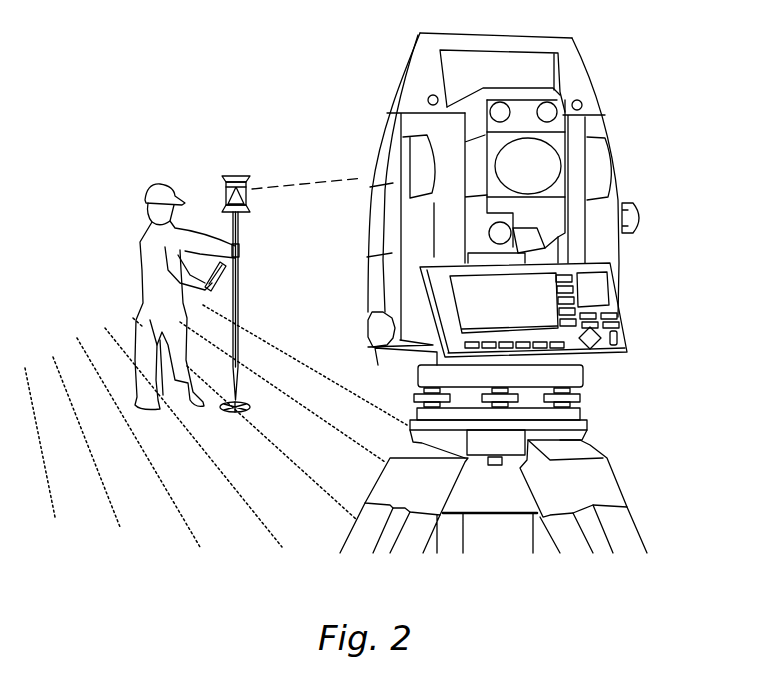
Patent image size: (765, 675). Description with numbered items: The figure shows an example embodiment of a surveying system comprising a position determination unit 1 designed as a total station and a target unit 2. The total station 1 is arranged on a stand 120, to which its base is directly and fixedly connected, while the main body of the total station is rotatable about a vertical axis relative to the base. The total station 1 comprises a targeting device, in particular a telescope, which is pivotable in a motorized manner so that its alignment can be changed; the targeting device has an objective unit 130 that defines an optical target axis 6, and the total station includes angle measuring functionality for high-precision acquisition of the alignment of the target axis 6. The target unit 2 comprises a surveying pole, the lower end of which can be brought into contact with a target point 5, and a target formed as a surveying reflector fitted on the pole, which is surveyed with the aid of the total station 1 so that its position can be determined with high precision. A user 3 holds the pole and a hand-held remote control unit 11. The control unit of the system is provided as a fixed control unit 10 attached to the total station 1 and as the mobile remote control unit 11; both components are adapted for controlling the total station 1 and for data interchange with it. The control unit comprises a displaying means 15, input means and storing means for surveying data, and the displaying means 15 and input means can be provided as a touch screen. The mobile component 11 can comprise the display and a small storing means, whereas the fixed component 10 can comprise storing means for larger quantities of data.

The position determination unit 1 is at (627, 96).
The target unit 2 is at (229, 161).
The user 3 is at (116, 284).
The target point 5 is at (251, 420).
The optical target axis 6 is at (338, 178).
The fixed control unit 10 is at (607, 348).
The hand-held remote control unit 11 is at (217, 277).
The displaying means 15 is at (470, 308).
The stand 120 is at (605, 487).
The objective unit 130 is at (537, 162).